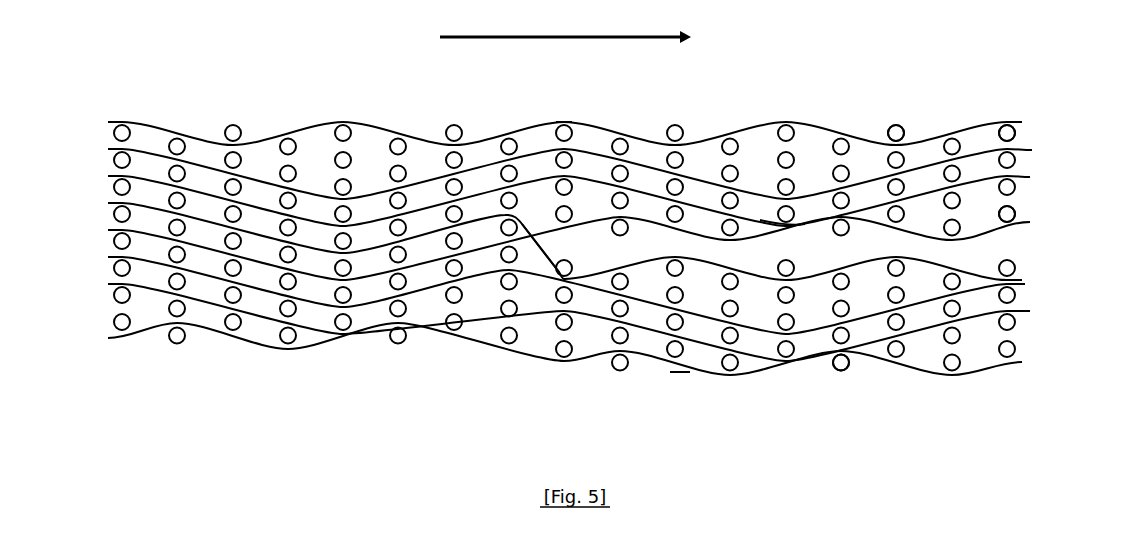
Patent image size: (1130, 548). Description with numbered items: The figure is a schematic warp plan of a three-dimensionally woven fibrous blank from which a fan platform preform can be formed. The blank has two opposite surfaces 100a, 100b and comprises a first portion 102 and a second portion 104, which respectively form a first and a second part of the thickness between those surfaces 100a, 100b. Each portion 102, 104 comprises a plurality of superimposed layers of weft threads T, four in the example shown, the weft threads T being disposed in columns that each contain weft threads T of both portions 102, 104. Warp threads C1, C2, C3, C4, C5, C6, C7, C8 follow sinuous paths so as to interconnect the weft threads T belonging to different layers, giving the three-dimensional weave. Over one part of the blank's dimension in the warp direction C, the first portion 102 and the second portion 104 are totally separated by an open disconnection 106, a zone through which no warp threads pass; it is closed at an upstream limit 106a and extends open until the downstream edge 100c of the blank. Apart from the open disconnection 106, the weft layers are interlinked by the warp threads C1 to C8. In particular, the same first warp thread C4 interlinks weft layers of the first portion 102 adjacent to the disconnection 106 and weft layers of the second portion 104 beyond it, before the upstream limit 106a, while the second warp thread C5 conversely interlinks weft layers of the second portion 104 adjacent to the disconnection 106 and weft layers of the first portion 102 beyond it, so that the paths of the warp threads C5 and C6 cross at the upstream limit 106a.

The warp direction C is at (565, 28).
The first portion 102 is at (99, 125).
The second portion 104 is at (99, 230).
The warp thread C1 is at (161, 124).
The warp thread C2 is at (202, 165).
The warp thread C3 is at (270, 209).
The first warp thread C4 is at (252, 233).
The second warp thread C5 is at (321, 278).
The warp thread C6 is at (368, 306).
The warp thread C7 is at (435, 320).
The warp thread C8 is at (478, 342).
The open disconnection 106 is at (758, 246).
The upstream limit 106a is at (552, 243).
The surface 100a is at (567, 106).
The surface 100b is at (683, 380).
The downstream edge 100c is at (1030, 308).
The weft threads T is at (897, 131).